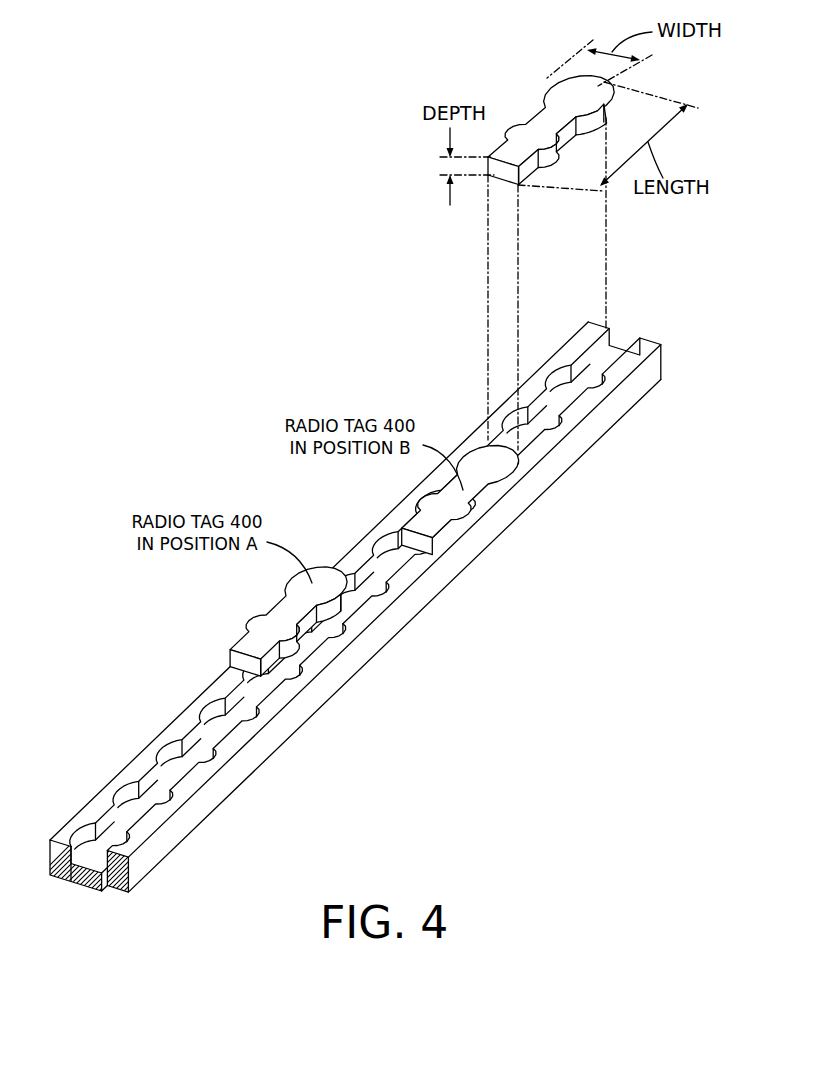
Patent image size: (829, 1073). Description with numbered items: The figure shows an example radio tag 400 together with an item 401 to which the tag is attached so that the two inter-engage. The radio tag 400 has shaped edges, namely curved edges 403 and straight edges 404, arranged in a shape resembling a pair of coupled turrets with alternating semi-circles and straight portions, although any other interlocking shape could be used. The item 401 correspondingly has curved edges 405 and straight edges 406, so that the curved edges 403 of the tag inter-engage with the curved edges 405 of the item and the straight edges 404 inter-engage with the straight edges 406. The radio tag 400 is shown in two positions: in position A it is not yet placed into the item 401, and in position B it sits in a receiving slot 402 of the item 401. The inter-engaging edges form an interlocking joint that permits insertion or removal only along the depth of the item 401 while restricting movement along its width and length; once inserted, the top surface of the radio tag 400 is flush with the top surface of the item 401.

The radio tag 400 is at (529, 96).
The item 401 is at (132, 760).
The receiving slot 402 is at (445, 550).
The curved edges 403 is at (247, 626).
The straight edges 404 is at (278, 672).
The curved edges 405 is at (507, 397).
The straight edges 406 is at (530, 442).